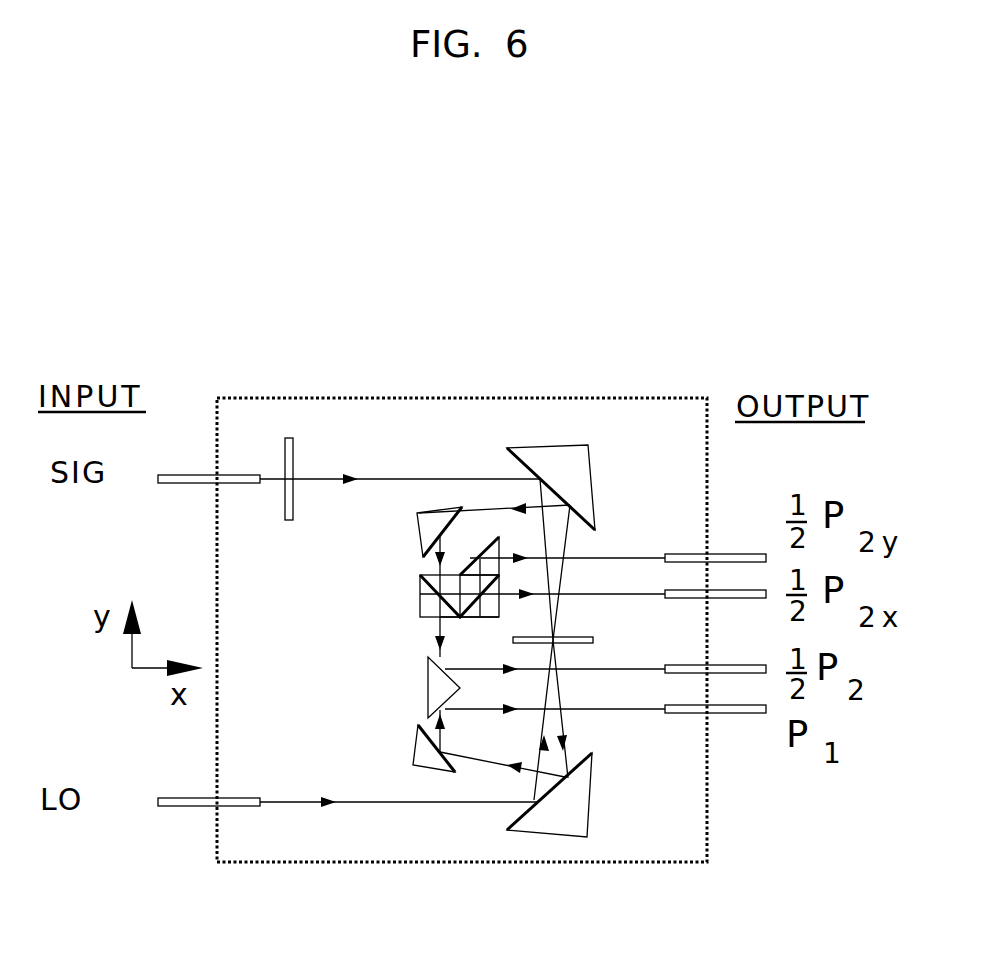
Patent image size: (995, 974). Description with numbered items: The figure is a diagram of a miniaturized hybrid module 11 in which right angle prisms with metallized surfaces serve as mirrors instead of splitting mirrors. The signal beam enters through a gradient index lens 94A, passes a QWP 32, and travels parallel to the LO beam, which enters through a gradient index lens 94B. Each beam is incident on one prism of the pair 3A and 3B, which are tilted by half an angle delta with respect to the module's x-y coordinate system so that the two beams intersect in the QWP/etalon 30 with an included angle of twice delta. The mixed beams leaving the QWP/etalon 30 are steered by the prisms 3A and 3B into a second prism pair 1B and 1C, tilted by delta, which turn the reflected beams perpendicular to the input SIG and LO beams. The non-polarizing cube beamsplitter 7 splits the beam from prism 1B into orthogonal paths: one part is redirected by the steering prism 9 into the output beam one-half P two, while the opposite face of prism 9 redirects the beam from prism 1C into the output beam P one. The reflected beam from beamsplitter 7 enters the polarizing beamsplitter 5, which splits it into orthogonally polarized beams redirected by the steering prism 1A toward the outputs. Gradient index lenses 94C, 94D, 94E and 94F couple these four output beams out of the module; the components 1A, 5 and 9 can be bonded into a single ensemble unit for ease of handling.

The hybrid module 11 is at (462, 863).
The gradient index lens 94A is at (183, 485).
The gradient index lens 94B is at (180, 797).
The gradient index lens 94C is at (678, 553).
The gradient index lens 94D is at (684, 590).
The gradient index lens 94E is at (690, 674).
The gradient index lens 94F is at (688, 714).
The QWP 32 is at (288, 521).
The right angle prism 3A is at (507, 448).
The right angle prism 3B is at (507, 830).
The steering prism 1A is at (485, 535).
The right angle prism 1B is at (418, 530).
The right angle prism 1C is at (414, 752).
The non-polarizing cube beamsplitter 7 is at (420, 597).
The polarizing beamsplitter 5 is at (468, 618).
The steering prism 9 is at (428, 688).
The QWP/etalon 30 is at (593, 640).